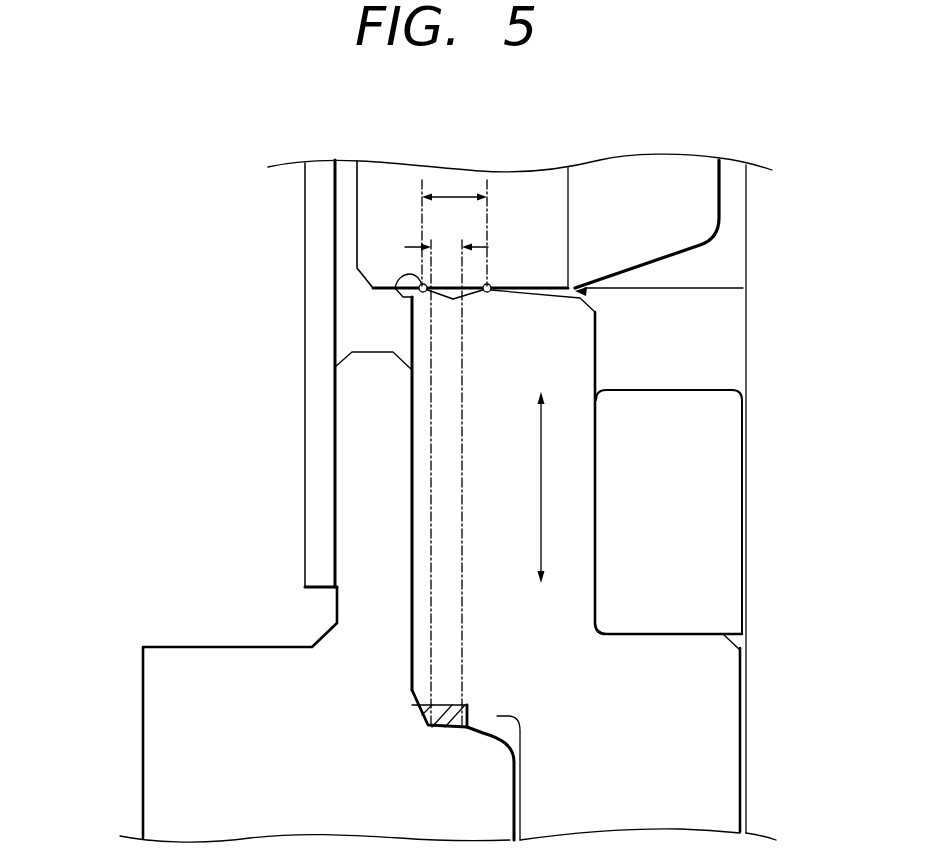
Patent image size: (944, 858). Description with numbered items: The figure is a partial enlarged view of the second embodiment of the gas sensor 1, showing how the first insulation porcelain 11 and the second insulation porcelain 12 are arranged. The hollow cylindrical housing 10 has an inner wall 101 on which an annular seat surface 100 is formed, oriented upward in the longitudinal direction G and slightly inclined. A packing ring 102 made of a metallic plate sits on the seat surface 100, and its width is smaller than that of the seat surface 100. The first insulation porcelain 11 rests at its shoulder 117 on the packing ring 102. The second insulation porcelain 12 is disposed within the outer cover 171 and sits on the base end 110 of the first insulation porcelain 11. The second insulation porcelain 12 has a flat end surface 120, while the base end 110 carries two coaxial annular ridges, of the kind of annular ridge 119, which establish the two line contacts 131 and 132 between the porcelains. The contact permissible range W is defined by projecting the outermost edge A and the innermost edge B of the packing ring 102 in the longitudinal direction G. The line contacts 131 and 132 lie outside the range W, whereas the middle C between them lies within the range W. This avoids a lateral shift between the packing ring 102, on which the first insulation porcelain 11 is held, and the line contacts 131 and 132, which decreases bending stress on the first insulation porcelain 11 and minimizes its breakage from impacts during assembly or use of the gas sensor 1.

The gas sensor 1 is at (160, 433).
The hollow cylindrical housing 10 is at (193, 688).
The first insulation porcelain 11 is at (697, 690).
The second insulation porcelain 12 is at (374, 216).
The annular seat surface 100 is at (491, 724).
The inner wall 101 is at (530, 795).
The packing ring 102 is at (445, 728).
The base end 110 is at (590, 289).
The shoulder 117 is at (453, 690).
The annular ridge 119 is at (423, 298).
The flat end surface 120 is at (366, 295).
The line contact 131 is at (393, 296).
The line contact 132 is at (490, 295).
The outer cover 171 is at (313, 521).
The outermost edge A is at (412, 706).
The innermost edge B is at (474, 698).
The middle C is at (455, 197).
The contact permissible range W is at (447, 247).
The longitudinal direction G is at (543, 482).